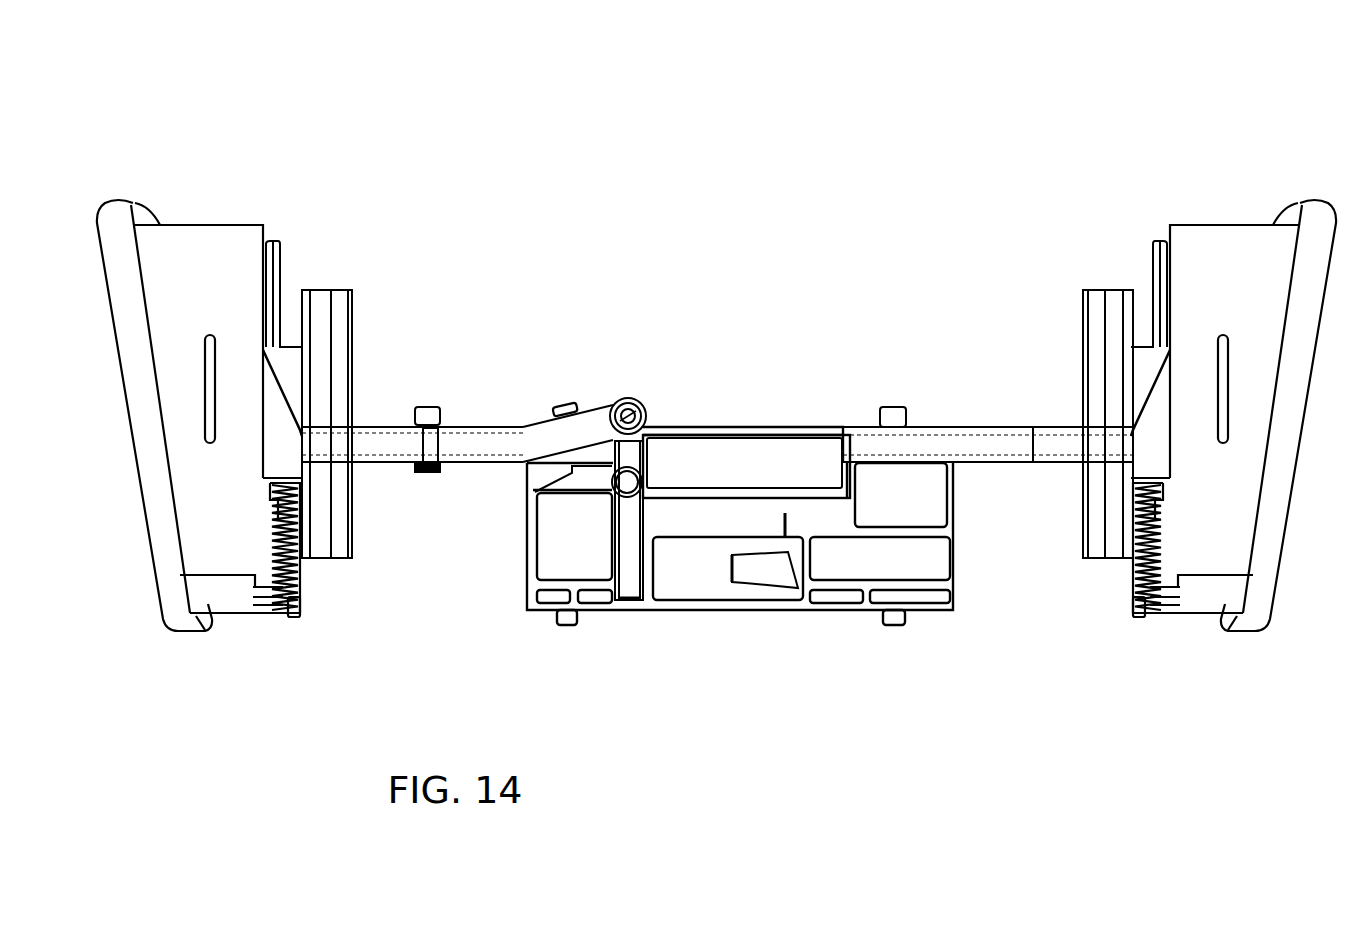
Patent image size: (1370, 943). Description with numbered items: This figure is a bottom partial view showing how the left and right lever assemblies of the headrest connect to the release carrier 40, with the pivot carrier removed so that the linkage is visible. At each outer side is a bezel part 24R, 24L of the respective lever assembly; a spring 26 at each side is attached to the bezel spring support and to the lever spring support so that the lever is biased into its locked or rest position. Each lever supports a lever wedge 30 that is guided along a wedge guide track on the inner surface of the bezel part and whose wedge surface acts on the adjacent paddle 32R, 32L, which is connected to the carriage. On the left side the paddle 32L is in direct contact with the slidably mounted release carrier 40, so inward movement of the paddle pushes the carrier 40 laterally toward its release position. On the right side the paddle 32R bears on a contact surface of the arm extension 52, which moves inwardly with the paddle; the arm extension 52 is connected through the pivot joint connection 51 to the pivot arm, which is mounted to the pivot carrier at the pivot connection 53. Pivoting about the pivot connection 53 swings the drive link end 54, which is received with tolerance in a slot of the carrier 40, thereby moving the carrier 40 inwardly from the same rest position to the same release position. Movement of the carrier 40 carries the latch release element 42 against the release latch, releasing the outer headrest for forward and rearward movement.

The bezel part 24R is at (210, 225).
The bezel part 24L is at (1223, 223).
The lever wedge 30 is at (281, 434).
The paddle 32R is at (336, 290).
The paddle 32L is at (1103, 290).
The arm extension 52 is at (490, 447).
The pivot joint connection 51 is at (630, 416).
The pivot connection 53 is at (610, 474).
The drive link end 54 is at (629, 575).
The release carrier 40 is at (770, 453).
The latch release element 42 is at (747, 570).
The spring 26 is at (300, 578).